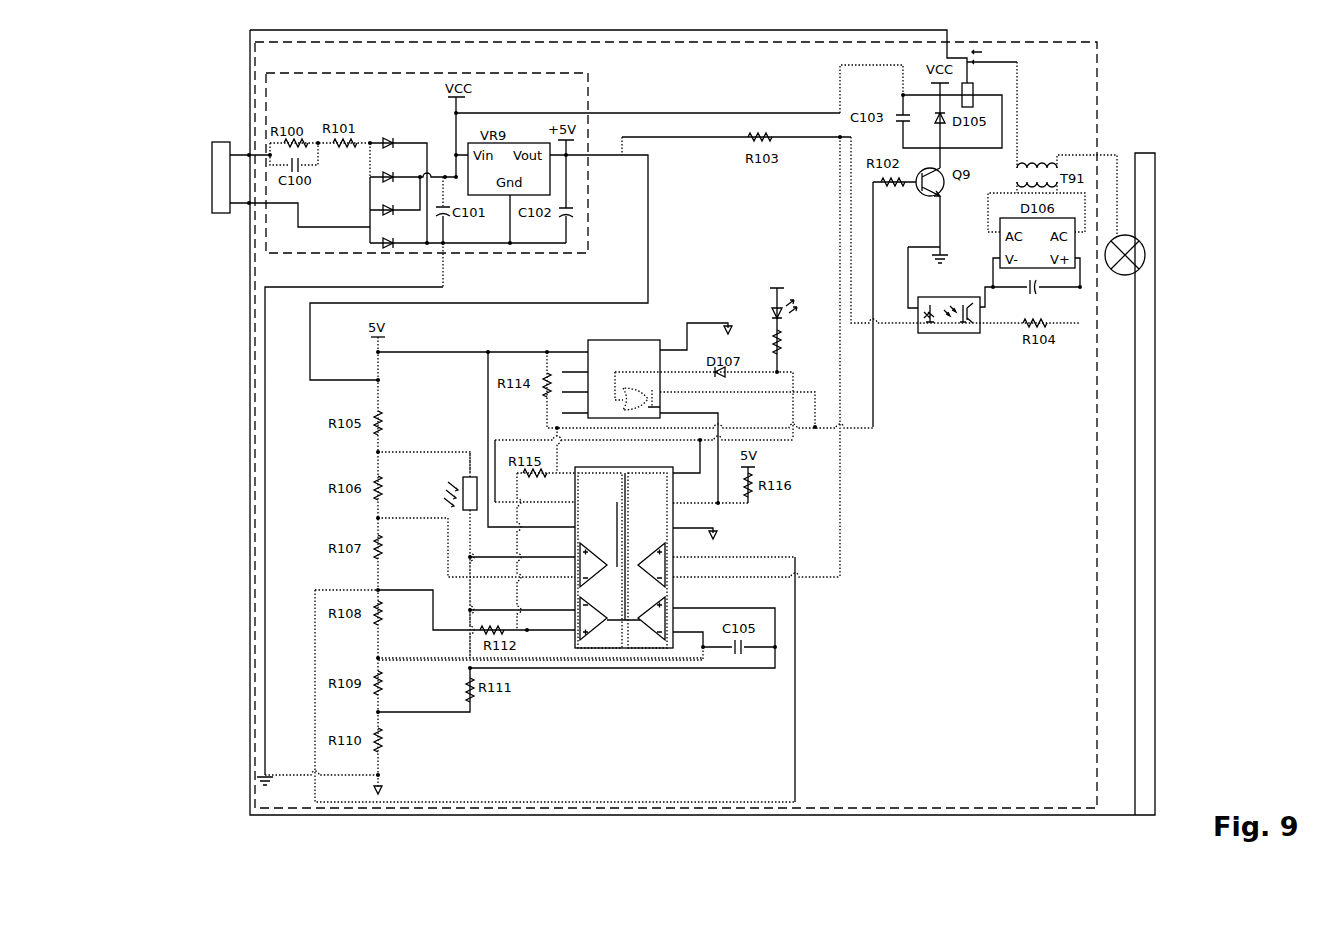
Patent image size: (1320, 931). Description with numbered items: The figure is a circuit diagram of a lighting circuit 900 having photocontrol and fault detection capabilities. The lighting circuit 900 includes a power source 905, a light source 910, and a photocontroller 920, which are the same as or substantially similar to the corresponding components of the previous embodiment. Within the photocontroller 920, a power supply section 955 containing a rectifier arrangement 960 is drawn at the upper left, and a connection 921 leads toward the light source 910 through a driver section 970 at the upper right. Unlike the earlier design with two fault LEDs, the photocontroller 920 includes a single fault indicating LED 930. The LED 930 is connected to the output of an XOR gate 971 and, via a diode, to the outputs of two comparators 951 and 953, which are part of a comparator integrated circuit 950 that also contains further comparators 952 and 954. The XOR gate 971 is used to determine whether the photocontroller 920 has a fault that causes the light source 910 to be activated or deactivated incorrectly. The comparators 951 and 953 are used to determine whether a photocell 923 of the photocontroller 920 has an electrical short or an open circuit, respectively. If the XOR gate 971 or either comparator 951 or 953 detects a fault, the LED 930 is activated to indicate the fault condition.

The lighting circuit 900 is at (1187, 43).
The power source 905 is at (222, 142).
The light source 910 is at (1130, 274).
The photocontroller 920 is at (775, 44).
The power line to load 921 is at (995, 51).
The photocell 923 is at (467, 477).
The fault indicating LED 930 is at (771, 308).
The quad comparator IC 950 is at (626, 580).
The comparator 951 is at (590, 545).
The second comparator 952 is at (593, 643).
The comparator 953 is at (652, 643).
The fourth comparator 954 is at (655, 548).
The power supply 955 is at (350, 73).
The rectifier bridge 960 is at (382, 110).
The optocoupler driver 970 is at (995, 337).
The XOR gate 971 is at (605, 340).